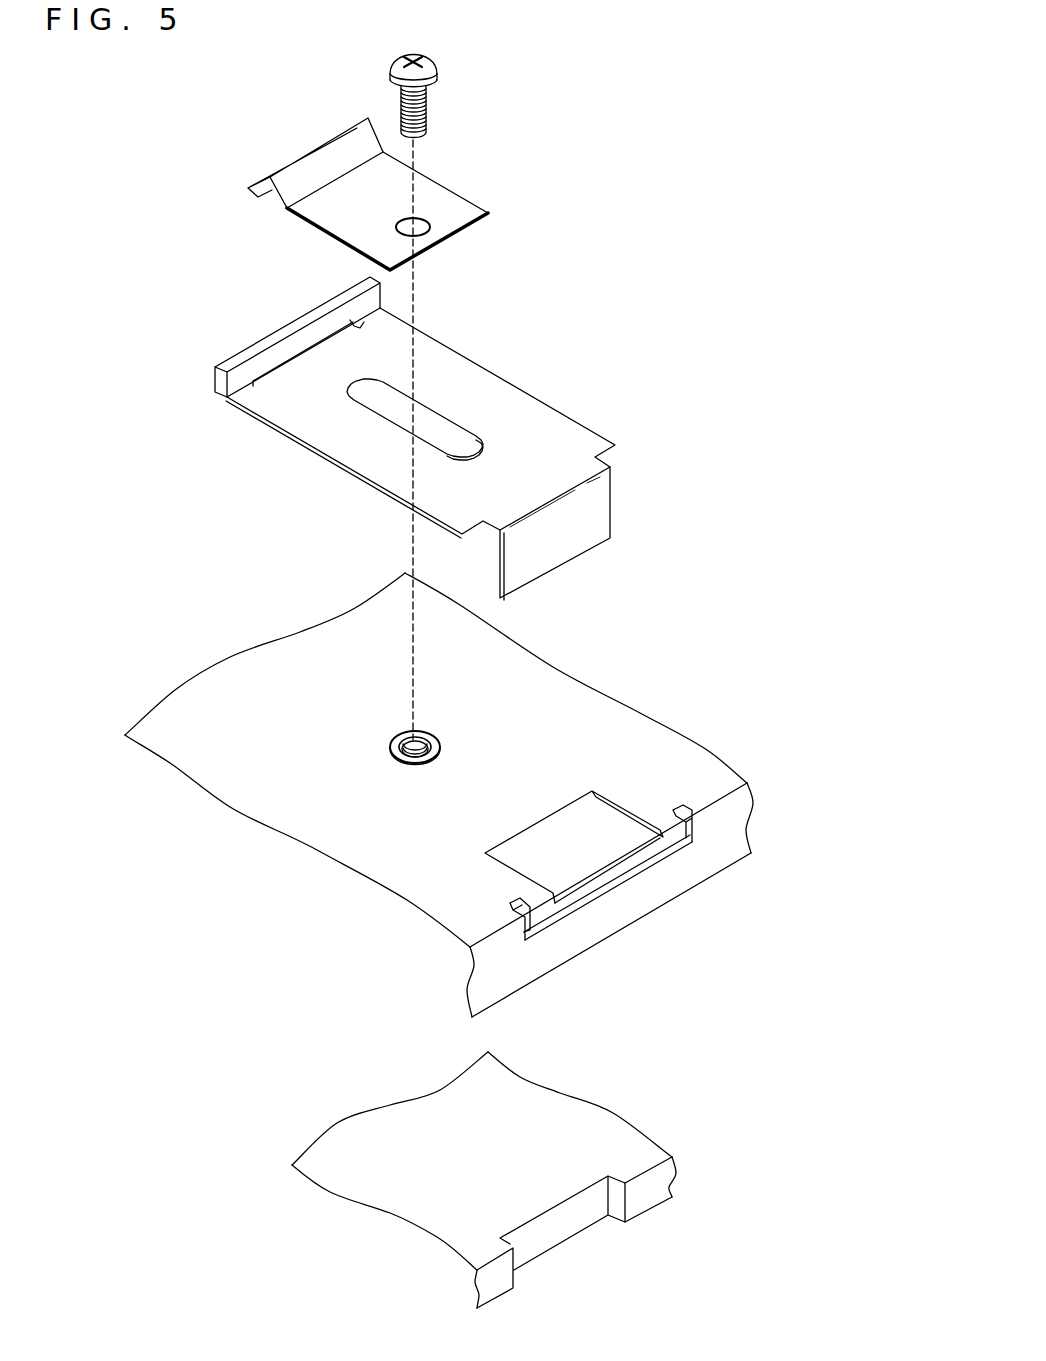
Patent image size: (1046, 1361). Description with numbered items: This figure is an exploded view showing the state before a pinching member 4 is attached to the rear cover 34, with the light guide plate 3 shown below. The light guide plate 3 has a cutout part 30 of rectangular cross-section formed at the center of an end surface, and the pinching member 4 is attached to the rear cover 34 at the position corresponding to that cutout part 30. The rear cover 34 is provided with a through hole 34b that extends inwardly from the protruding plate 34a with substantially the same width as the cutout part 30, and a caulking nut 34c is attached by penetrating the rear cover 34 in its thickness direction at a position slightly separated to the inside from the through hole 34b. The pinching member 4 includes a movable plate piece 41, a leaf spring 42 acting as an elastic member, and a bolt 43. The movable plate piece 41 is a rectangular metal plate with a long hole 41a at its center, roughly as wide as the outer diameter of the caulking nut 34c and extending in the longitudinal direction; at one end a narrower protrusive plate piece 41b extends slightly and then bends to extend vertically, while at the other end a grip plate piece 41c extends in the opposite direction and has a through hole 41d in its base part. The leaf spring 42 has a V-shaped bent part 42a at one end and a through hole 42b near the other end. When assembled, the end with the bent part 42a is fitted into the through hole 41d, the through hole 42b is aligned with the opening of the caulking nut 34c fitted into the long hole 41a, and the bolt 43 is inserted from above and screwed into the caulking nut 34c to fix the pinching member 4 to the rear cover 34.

The light guide plate 3 is at (497, 1180).
The cutout part 30 is at (578, 1222).
The rear cover 34 is at (490, 795).
The protruding plate 34a is at (733, 818).
The through hole 34b is at (625, 813).
The caulking nut 34c is at (392, 757).
The pinching member 4 is at (565, 62).
The movable plate piece 41 is at (462, 412).
The long hole 41a is at (431, 397).
The protrusive plate piece 41b is at (600, 510).
The grip plate piece 41c is at (258, 345).
The through hole 41d is at (253, 392).
The leaf spring 42 is at (412, 189).
The bent part 42a is at (308, 168).
The through hole 42b is at (429, 228).
The bolt 43 is at (433, 67).